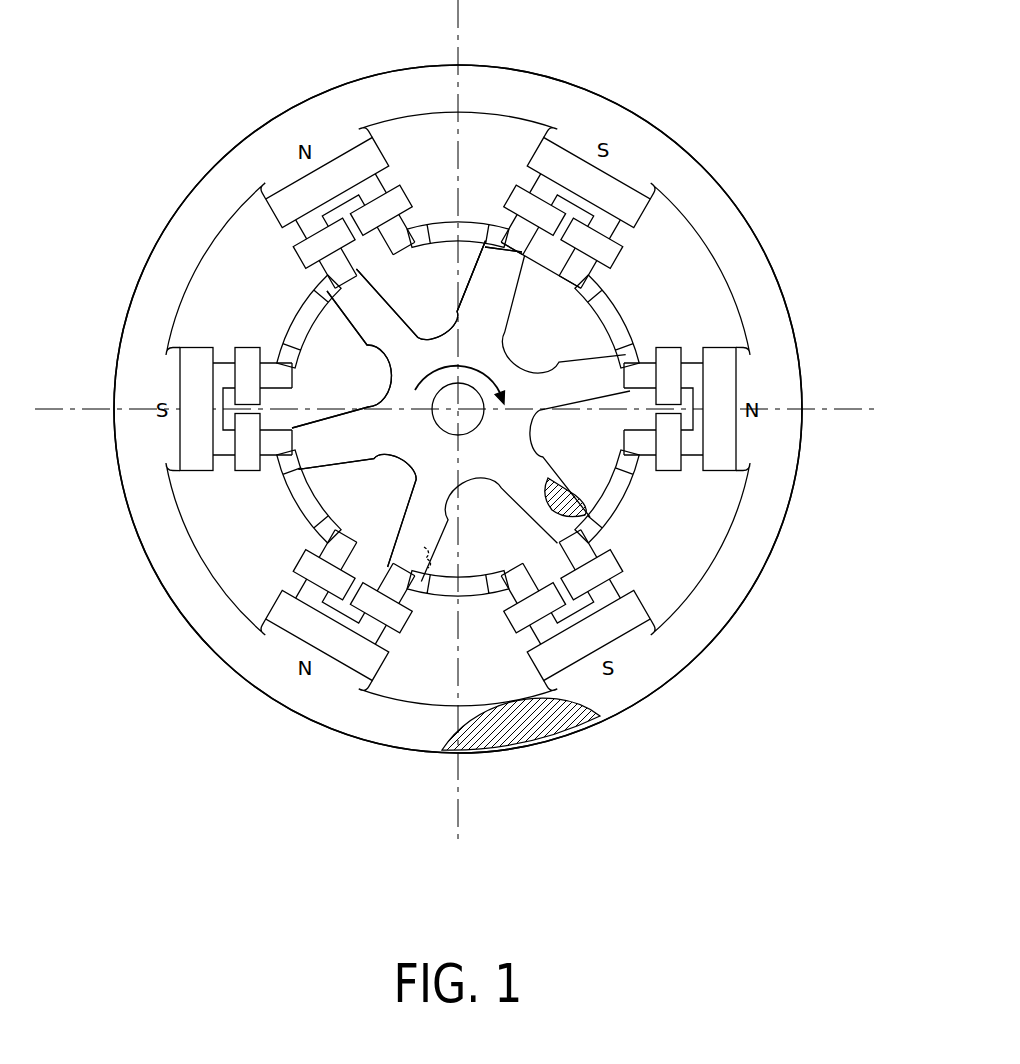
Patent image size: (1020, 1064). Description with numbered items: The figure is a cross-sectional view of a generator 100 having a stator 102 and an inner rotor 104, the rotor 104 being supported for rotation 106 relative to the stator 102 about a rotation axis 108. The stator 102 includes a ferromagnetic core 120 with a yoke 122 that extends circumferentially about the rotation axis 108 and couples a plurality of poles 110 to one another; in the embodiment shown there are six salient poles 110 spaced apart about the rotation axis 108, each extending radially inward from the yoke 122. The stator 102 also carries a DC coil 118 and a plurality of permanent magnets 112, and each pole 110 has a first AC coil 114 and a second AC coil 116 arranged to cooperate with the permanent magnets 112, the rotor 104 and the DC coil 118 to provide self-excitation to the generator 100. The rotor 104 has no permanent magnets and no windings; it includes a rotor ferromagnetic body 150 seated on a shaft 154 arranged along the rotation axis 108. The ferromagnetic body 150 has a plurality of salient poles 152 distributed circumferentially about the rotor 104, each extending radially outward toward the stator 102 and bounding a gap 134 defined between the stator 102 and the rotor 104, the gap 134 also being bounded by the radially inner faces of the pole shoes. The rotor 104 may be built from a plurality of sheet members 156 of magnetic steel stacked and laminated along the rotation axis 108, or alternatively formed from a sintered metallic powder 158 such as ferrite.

The generator 100 is at (157, 681).
The stator 102 is at (834, 385).
The rotor 104 is at (632, 345).
The rotation 106 is at (428, 380).
The rotation axis 108 is at (447, 413).
The pole 110 is at (795, 424).
The permanent magnet 112 is at (648, 496).
The first AC coil 114 is at (545, 262).
The second AC coil 116 is at (567, 305).
The DC coil 118 is at (634, 621).
The ferromagnetic core 120 is at (535, 740).
The yoke 122 is at (192, 214).
The gap 134 is at (343, 296).
The rotor ferromagnetic body 150 is at (560, 250).
The salient pole 152 is at (500, 265).
The shaft 154 is at (480, 428).
The sheet member 156 is at (562, 500).
The sintered metallic powder 158 is at (459, 533).